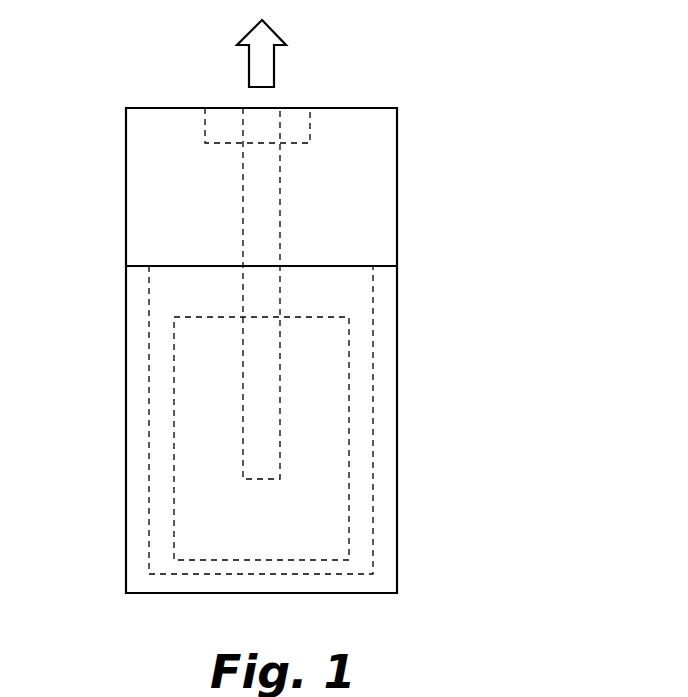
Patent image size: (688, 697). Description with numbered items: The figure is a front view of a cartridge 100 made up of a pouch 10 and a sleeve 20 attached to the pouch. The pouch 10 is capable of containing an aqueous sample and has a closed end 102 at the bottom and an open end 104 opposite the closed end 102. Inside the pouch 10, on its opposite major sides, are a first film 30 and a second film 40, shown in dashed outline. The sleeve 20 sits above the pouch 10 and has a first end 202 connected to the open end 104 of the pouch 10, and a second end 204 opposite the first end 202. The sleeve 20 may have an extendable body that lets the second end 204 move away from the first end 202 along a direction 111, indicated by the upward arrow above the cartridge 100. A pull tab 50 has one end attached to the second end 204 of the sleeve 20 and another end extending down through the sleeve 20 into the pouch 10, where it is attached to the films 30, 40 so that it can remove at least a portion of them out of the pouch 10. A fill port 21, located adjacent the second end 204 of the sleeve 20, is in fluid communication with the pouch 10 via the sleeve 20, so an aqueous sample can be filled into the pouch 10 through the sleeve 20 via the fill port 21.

The cartridge 100 is at (272, 331).
The pouch 10 is at (271, 438).
The sleeve 20 is at (251, 156).
The fill port 21 is at (310, 133).
The first film 30 is at (334, 438).
The second film 40 is at (348, 481).
The pull tab 50 is at (280, 295).
The closed end 102 is at (254, 593).
The open end 104 is at (174, 266).
The direction 111 is at (268, 33).
The first end 202 is at (163, 267).
The second end 204 is at (143, 108).